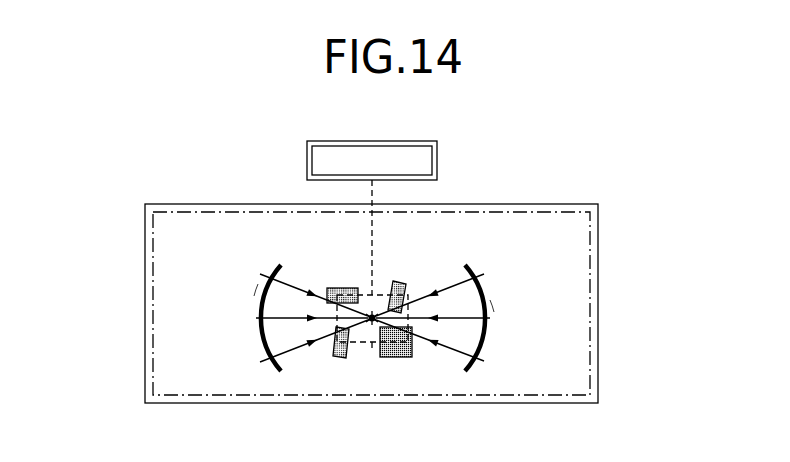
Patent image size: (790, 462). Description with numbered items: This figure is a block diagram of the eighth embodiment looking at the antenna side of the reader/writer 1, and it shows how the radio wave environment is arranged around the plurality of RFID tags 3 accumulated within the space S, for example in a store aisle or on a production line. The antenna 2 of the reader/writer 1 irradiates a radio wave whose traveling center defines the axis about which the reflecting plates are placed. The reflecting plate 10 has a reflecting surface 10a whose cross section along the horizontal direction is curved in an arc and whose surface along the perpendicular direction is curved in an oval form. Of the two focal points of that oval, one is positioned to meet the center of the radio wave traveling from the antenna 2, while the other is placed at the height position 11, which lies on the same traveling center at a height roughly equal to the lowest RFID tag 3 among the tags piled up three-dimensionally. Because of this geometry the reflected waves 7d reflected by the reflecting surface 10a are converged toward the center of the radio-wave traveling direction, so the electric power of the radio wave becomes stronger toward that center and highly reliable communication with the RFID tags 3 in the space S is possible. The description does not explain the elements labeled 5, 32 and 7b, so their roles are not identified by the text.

The reader/writer 1 is at (438, 155).
The housing 5 is at (598, 237).
The space S is at (598, 389).
The height position 11 is at (376, 308).
The reflecting plate 10 is at (254, 327).
The reflecting surface 10a is at (258, 284).
The reflected waves 7d is at (463, 278).
The antenna 2 is at (368, 348).
The light receiving element 32 is at (318, 422).
The light receiving element 7b is at (407, 287).
The RFID tag 3 is at (395, 357).